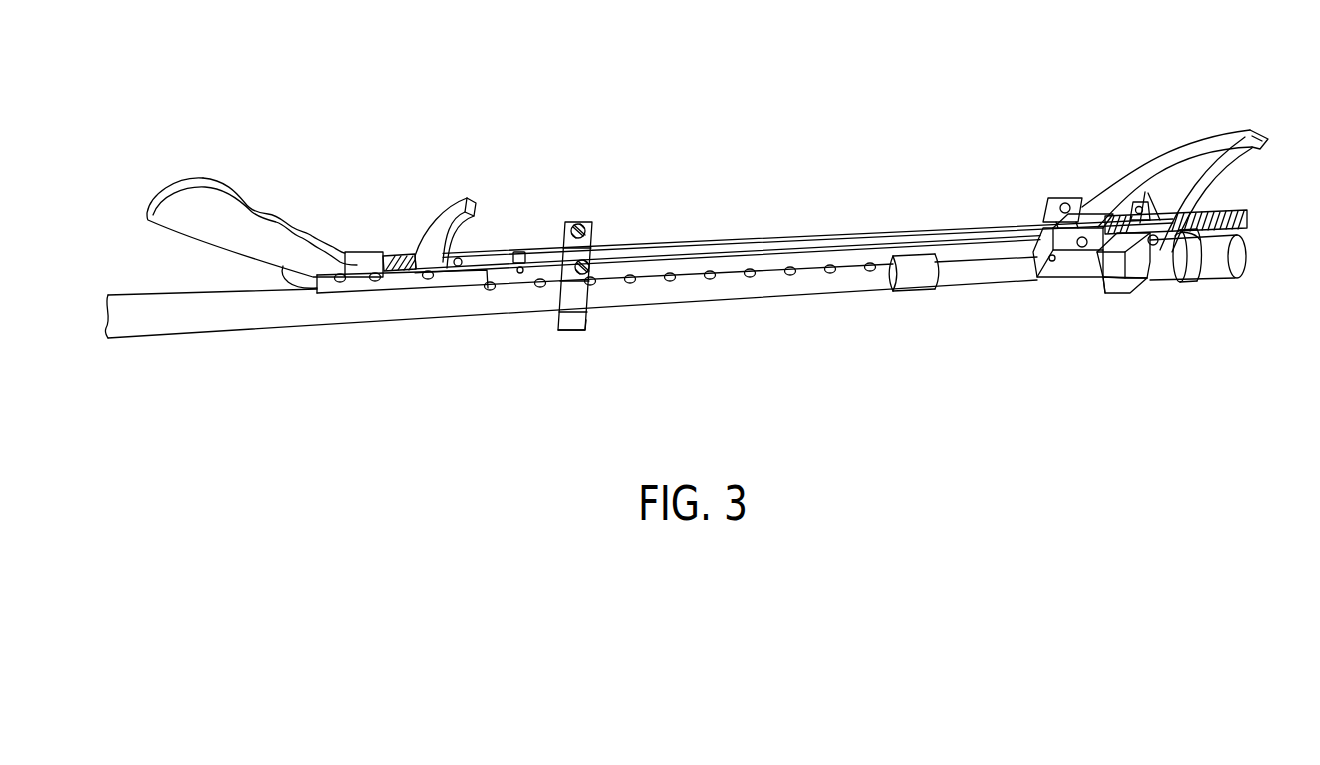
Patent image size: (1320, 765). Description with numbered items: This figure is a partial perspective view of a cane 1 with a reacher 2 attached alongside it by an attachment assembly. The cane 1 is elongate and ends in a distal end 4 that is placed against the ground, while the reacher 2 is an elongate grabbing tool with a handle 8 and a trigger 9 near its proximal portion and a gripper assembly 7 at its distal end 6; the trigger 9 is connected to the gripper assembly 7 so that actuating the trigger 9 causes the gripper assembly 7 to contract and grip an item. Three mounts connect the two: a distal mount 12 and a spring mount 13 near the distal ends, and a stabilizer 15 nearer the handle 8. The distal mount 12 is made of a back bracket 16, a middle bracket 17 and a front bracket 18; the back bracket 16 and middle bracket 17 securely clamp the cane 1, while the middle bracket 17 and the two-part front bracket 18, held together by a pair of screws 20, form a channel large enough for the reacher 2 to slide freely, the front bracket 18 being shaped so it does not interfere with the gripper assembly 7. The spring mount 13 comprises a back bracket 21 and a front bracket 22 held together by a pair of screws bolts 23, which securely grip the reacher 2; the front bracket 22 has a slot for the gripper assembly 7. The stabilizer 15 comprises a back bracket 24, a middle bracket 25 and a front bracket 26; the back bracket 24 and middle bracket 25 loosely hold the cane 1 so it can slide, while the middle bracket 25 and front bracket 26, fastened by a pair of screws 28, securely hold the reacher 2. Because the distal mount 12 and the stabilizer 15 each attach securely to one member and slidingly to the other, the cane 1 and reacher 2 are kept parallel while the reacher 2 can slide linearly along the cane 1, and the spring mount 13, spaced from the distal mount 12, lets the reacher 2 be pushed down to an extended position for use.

The cane 1 is at (203, 312).
The reacher 2 is at (762, 243).
The distal end 4 is at (1206, 263).
The distal end 6 is at (1243, 216).
The gripper assembly 7 is at (1180, 152).
The handle 8 is at (181, 180).
The trigger 9 is at (437, 216).
The distal mount 12 is at (1151, 236).
The spring mount 13 is at (1041, 216).
The stabilizer 15 is at (579, 266).
The back bracket 16 is at (1100, 293).
The middle bracket 17 is at (1142, 280).
The front bracket 18 is at (1244, 134).
The screws 20 is at (1157, 236).
The back bracket 21 is at (1052, 274).
The front bracket 22 is at (1032, 208).
The screws bolts 23 is at (1059, 194).
The back bracket 24 is at (568, 332).
The middle bracket 25 is at (580, 303).
The front bracket 26 is at (592, 243).
The screws 28 is at (579, 223).